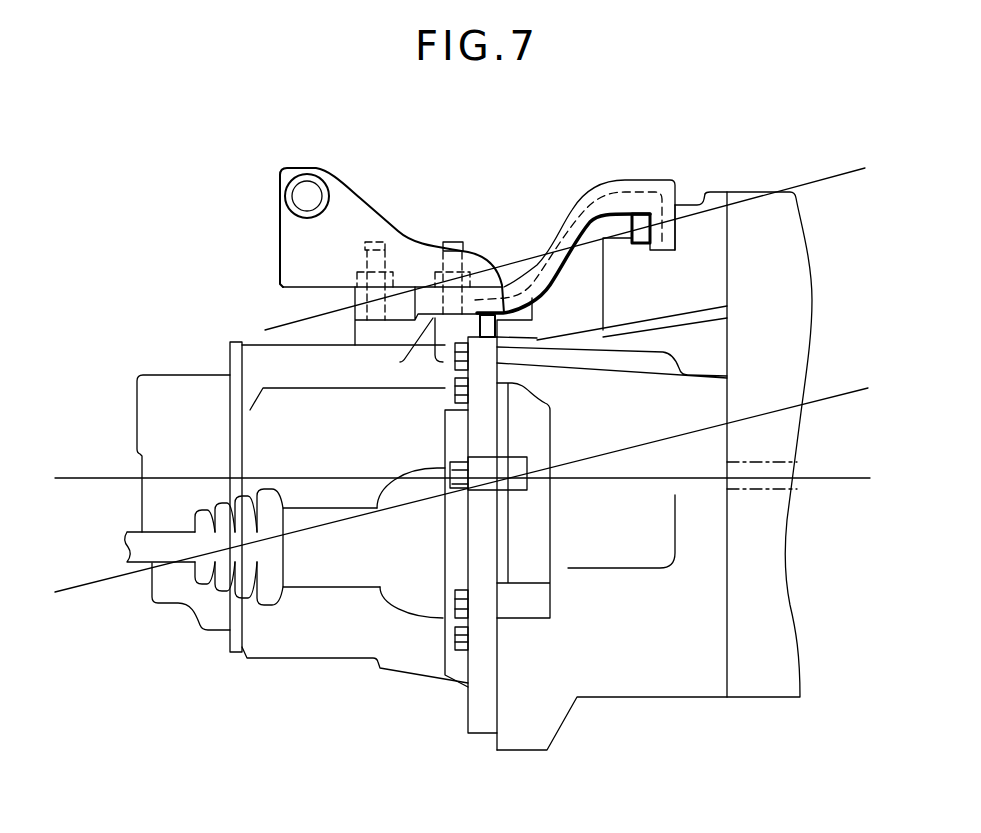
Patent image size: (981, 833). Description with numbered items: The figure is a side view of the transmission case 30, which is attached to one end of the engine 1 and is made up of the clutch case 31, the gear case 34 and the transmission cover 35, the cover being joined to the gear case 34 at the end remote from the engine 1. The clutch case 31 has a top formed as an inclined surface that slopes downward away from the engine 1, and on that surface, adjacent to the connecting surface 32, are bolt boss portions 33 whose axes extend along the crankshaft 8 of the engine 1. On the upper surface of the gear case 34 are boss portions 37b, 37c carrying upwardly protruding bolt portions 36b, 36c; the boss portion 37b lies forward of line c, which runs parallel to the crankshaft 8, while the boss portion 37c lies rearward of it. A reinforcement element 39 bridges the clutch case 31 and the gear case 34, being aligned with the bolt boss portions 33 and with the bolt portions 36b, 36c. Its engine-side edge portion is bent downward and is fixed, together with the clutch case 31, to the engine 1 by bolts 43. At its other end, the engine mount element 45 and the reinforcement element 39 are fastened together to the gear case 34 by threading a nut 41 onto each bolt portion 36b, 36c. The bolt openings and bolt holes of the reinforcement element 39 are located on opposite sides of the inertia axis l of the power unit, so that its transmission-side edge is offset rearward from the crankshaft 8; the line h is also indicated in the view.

The engine 1 is at (754, 192).
The crankshaft 8 is at (752, 492).
The transmission case 30 is at (625, 700).
The clutch case 31 is at (712, 190).
The connecting surface 32 is at (728, 672).
The bolt boss portions 33 is at (710, 222).
The gear case 34 is at (322, 670).
The transmission cover 35 is at (153, 605).
The bolt portion 36b is at (370, 240).
The bolt portion 36c is at (452, 240).
The boss portion 37b is at (353, 327).
The boss portion 37c is at (507, 282).
The reinforcement element 39 is at (618, 178).
The nut 41 is at (357, 277).
The bolts 43 is at (600, 286).
The engine mount element 45 is at (302, 165).
The line C c is at (453, 479).
The horizontal reference line h is at (576, 243).
The inertia axis l is at (452, 499).